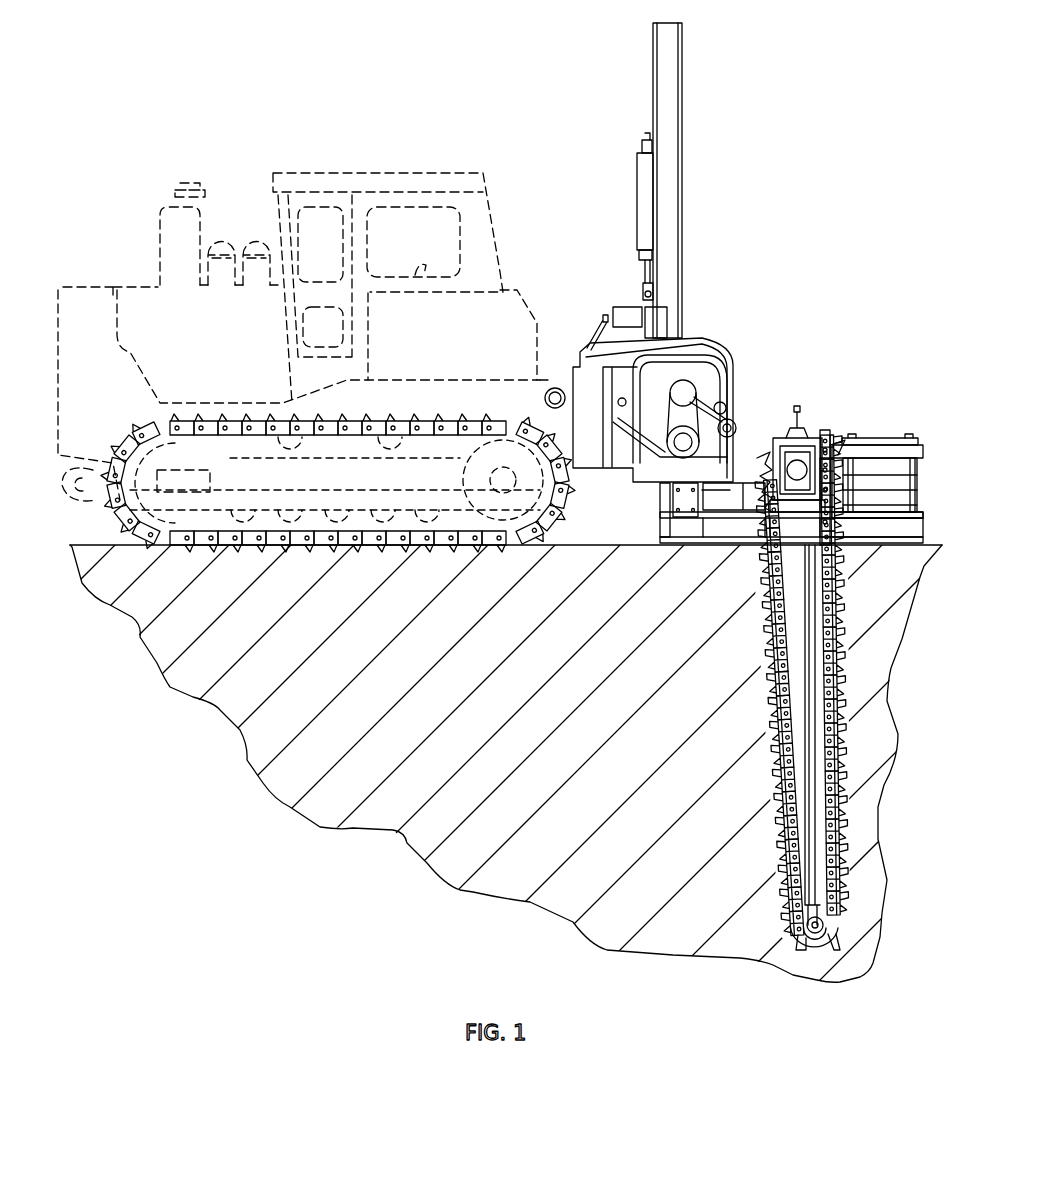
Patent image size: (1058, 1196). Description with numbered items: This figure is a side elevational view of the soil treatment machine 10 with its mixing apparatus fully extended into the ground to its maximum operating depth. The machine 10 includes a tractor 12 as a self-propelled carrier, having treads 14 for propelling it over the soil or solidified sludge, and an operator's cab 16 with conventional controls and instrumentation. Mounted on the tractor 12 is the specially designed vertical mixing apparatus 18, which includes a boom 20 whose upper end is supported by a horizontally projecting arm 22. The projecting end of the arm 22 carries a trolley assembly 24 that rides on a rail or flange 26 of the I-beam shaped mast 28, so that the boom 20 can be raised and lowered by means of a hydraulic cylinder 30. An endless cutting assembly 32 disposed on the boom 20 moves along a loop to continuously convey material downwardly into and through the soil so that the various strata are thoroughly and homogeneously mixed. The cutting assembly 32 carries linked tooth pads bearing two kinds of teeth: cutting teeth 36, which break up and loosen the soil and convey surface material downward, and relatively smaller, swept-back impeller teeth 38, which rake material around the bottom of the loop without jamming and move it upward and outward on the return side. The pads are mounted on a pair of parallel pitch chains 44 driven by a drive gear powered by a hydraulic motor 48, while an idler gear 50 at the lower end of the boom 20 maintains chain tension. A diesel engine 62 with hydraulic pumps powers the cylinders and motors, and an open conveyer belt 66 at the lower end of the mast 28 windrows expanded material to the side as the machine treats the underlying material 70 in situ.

The soil treatment machine 10 is at (815, 172).
The tractor 12 is at (536, 312).
The treads 14 is at (128, 519).
The operator's cab 16 is at (505, 237).
The vertical mixing apparatus 18 is at (827, 428).
The boom 20 is at (817, 565).
The arm 22 is at (745, 483).
The trolley assembly 24 is at (676, 503).
The rail or flange 26 is at (690, 296).
The mast 28 is at (676, 220).
The hydraulic cylinder 30 is at (645, 228).
The endless cutting assembly 32 is at (853, 838).
The cutting teeth 36 is at (832, 937).
The impeller teeth 38 is at (822, 940).
The pitch chains 44 is at (827, 885).
The hydraulic motor 48 is at (792, 440).
The idler gear 50 is at (828, 923).
The diesel engine 62 is at (723, 398).
The open conveyer belt 66 is at (890, 438).
The material to be treated 70 is at (462, 689).